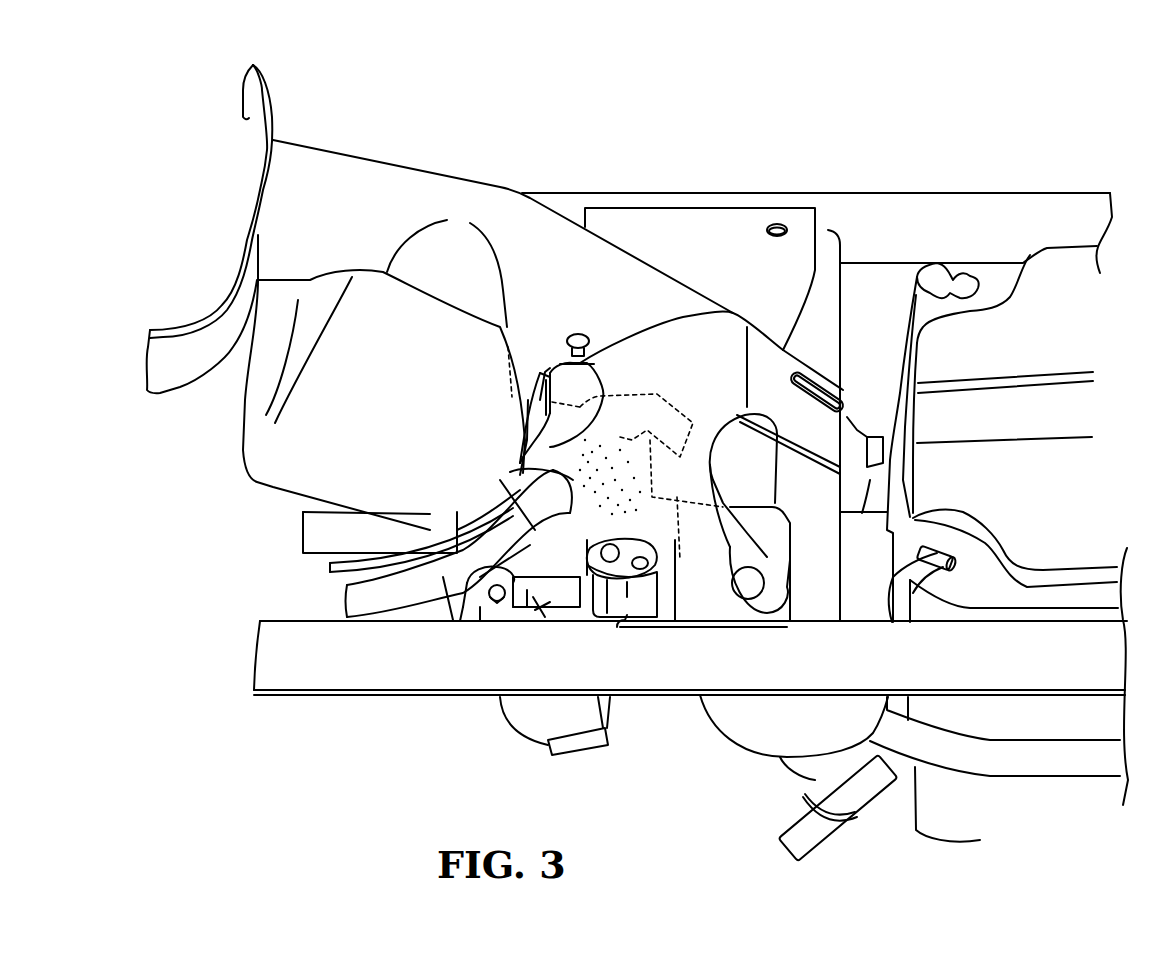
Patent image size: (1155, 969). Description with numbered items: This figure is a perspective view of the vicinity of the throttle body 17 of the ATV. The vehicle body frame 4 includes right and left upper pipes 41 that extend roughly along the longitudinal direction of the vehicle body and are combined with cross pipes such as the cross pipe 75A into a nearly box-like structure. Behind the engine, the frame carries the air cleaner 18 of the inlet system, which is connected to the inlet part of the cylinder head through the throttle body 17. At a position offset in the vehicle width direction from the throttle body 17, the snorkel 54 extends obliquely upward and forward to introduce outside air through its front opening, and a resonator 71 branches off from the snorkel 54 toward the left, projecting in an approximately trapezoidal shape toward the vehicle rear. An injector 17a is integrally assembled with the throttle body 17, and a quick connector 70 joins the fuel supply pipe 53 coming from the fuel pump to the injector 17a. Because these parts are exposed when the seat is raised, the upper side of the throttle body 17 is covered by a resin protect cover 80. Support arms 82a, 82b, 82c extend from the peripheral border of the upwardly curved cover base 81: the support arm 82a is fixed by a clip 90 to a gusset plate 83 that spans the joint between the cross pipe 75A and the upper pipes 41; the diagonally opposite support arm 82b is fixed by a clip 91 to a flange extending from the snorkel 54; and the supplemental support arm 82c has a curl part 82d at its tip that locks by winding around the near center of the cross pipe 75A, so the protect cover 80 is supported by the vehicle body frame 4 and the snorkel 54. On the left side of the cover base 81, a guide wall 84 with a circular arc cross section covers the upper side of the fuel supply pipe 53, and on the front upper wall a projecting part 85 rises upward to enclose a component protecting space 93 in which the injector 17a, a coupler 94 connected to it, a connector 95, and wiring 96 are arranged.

The vehicle body frame 4 is at (987, 184).
The throttle body 17 is at (530, 535).
The injector 17a is at (590, 535).
The air cleaner 18 is at (1072, 293).
The upper pipes 41 is at (1043, 203).
The fuel supply pipe 53 is at (372, 600).
The snorkel 54 is at (375, 165).
The quick connector 70 is at (590, 523).
The resonator 71 is at (277, 467).
The cross pipe 75A is at (820, 377).
The protect cover 80 is at (762, 312).
The cover base 81 is at (663, 337).
The support arm 82a is at (580, 447).
The support arm 82b is at (550, 368).
The support arm 82c is at (872, 292).
The curl part 82d is at (870, 378).
The gusset plate 83 is at (660, 620).
The guide wall 84 is at (507, 500).
The projecting part 85 is at (587, 363).
The clip 90 is at (753, 593).
The clip 91 is at (577, 340).
The component protecting space 93 is at (528, 400).
The coupler 94 is at (517, 477).
The connector 95 is at (543, 443).
The wiring 96 is at (430, 545).